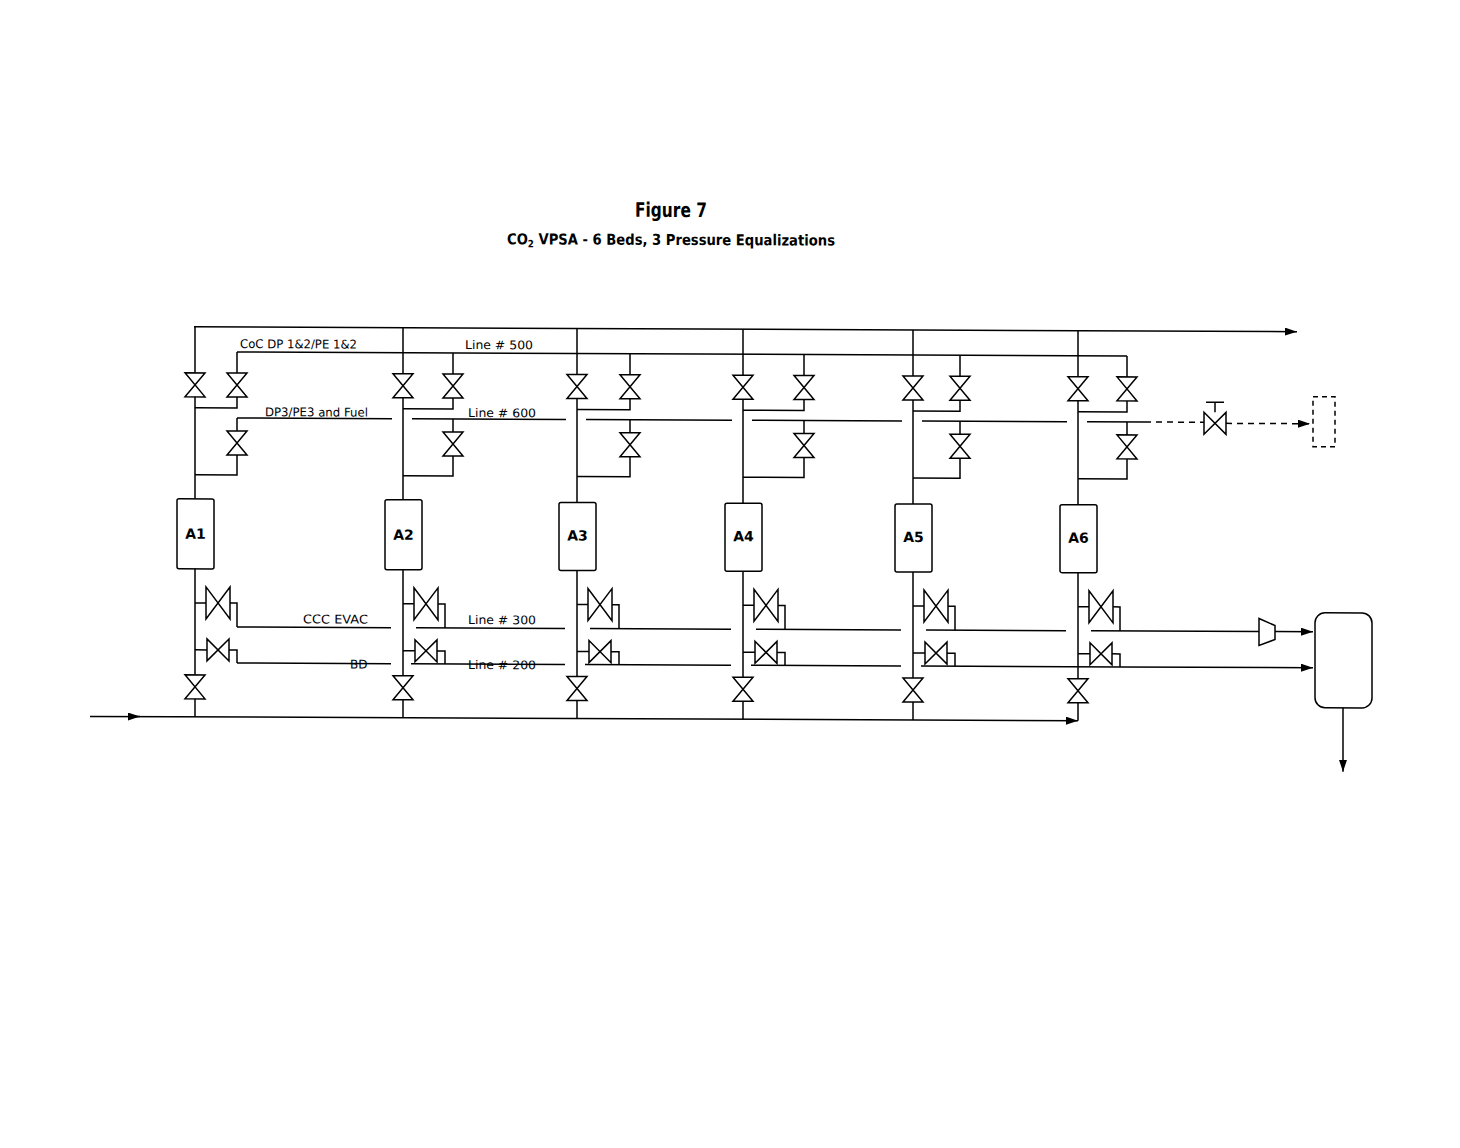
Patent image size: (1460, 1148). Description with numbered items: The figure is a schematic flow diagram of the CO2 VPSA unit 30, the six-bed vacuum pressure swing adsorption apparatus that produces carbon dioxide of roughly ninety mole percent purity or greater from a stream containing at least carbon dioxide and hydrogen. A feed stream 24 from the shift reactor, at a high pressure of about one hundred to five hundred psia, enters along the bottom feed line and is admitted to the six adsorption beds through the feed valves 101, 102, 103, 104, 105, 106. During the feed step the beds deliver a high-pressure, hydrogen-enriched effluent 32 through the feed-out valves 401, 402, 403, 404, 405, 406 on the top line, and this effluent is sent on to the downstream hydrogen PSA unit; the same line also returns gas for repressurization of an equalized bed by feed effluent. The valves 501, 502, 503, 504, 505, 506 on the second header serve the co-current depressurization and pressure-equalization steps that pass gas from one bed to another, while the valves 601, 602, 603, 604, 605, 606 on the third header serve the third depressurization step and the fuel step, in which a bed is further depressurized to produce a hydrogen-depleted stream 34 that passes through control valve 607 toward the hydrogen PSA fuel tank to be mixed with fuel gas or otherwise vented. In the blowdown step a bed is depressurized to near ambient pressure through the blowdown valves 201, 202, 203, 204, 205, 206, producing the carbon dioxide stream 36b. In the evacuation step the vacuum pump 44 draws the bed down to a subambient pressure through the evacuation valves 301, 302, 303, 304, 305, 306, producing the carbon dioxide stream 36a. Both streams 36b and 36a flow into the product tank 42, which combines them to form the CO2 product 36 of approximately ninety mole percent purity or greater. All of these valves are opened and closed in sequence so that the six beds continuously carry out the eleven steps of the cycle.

The feed stream 24 is at (584, 710).
The CO2 VPSA unit 30 is at (226, 276).
The high-pressure effluent 32 is at (785, 328).
The hydrogen-depleted stream 34 is at (1278, 432).
The CO2 product 36 is at (1265, 753).
The evacuation stream 36a is at (1245, 622).
The blowdown stream 36b is at (1216, 669).
The product tank 42 is at (1370, 646).
The vacuum pump 44 is at (1256, 608).
The valve 101 is at (212, 696).
The valve 102 is at (422, 697).
The valve 103 is at (598, 697).
The valve 104 is at (768, 698).
The valve 105 is at (932, 699).
The valve 106 is at (1098, 700).
The valve 201 is at (230, 649).
The valve 202 is at (442, 650).
The valve 203 is at (616, 651).
The valve 204 is at (787, 651).
The valve 205 is at (949, 652).
The valve 206 is at (1114, 653).
The valve 301 is at (230, 622).
The valve 302 is at (442, 623).
The valve 303 is at (616, 624).
The valve 304 is at (787, 624).
The valve 305 is at (949, 625).
The valve 306 is at (1114, 626).
The valve 401 is at (184, 413).
The valve 402 is at (392, 414).
The valve 403 is at (567, 415).
The valve 404 is at (734, 416).
The valve 405 is at (903, 417).
The valve 406 is at (1068, 418).
The valve 501 is at (235, 380).
The valve 502 is at (447, 381).
The valve 503 is at (623, 382).
The valve 504 is at (794, 382).
The valve 505 is at (955, 383).
The valve 506 is at (1121, 384).
The valve 601 is at (229, 446).
The valve 602 is at (441, 447).
The valve 603 is at (616, 448).
The valve 604 is at (786, 448).
The valve 605 is at (950, 449).
The valve 606 is at (1115, 450).
The valve 607 is at (1227, 410).